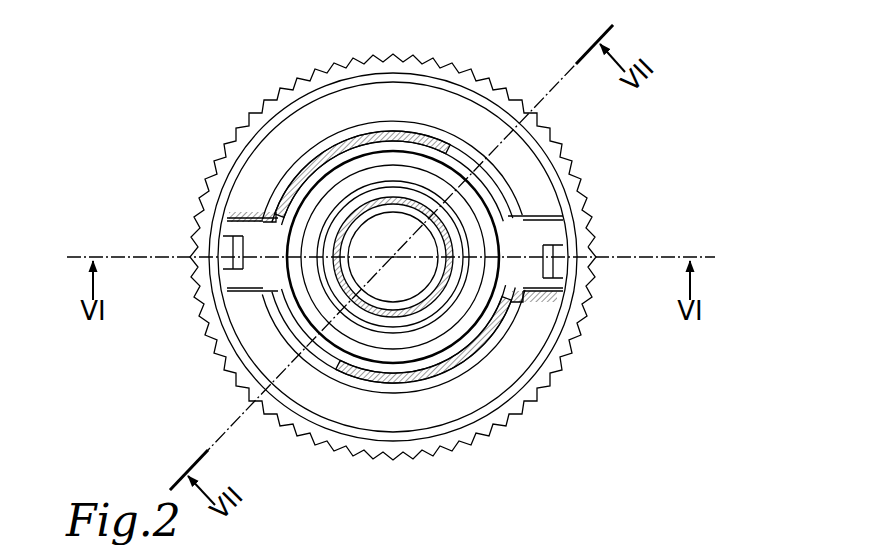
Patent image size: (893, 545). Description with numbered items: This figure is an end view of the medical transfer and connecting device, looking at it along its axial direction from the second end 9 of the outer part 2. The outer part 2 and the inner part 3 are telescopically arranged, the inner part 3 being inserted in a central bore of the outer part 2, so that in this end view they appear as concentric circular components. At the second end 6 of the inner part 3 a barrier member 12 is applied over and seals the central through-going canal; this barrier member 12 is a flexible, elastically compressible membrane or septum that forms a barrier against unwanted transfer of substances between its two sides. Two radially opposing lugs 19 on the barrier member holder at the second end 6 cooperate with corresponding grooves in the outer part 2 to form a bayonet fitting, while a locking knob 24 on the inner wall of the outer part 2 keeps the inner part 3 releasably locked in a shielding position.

The barrier member 12 is at (376, 240).
The inner part 3 is at (397, 219).
The second end 6 is at (447, 157).
The lugs 19 is at (517, 249).
The locking knob 24 is at (236, 266).
The outer part 2 is at (422, 257).
The second end 9 is at (537, 133).